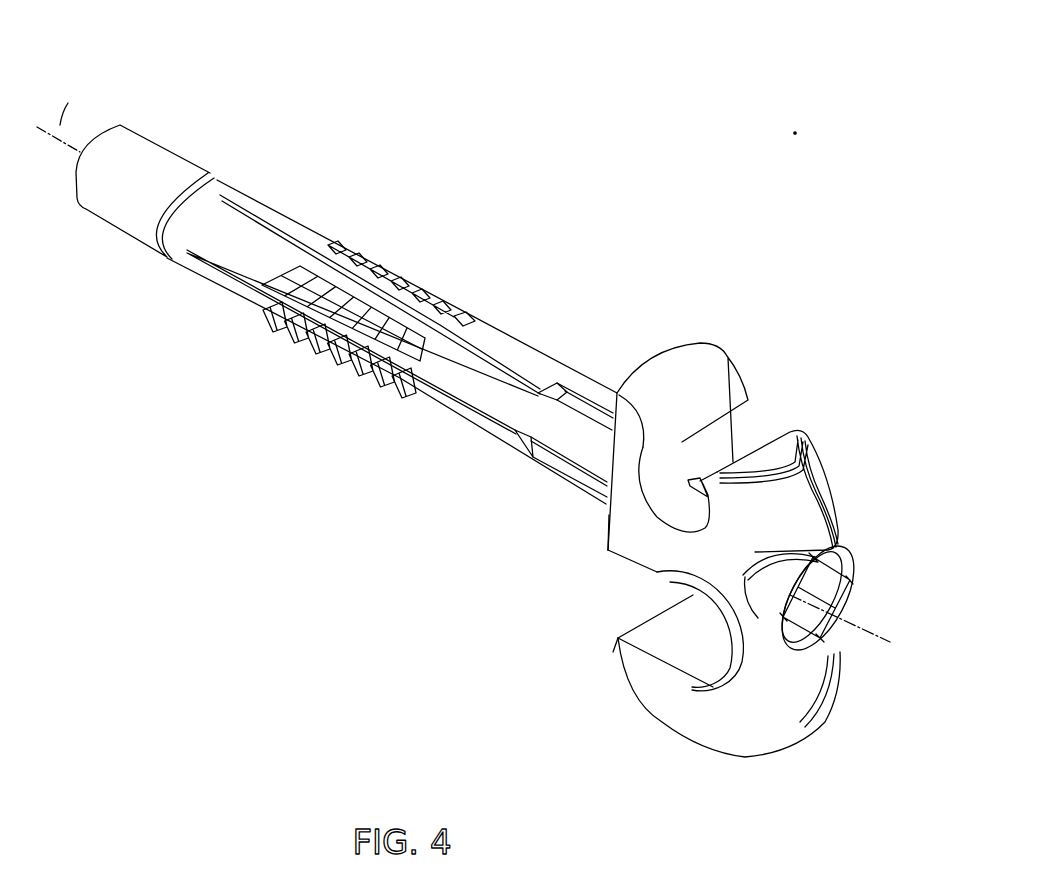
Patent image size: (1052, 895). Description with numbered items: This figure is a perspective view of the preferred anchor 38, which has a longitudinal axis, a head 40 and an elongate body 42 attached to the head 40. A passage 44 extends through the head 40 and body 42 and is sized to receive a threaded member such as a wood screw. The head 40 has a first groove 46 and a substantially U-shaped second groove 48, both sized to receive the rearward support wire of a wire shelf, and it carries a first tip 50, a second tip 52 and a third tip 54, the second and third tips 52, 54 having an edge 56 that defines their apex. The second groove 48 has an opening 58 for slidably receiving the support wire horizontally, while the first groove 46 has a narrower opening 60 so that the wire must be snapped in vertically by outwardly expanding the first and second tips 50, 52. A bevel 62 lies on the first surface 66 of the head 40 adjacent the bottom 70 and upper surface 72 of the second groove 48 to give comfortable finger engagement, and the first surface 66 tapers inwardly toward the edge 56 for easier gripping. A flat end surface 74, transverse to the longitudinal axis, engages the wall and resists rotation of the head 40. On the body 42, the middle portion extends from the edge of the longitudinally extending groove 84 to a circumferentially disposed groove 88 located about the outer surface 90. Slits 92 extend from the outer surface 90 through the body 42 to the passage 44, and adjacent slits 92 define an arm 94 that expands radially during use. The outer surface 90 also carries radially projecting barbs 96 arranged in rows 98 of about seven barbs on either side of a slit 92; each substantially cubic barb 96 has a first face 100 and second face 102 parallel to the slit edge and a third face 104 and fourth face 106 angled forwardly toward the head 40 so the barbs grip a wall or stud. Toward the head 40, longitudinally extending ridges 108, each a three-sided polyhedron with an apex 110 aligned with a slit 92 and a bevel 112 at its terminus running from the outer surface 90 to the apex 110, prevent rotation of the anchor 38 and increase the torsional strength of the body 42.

The anchor 38 is at (660, 88).
The head 40 is at (847, 414).
The elongate body 42 is at (456, 127).
The passage 44 is at (840, 590).
The first groove 46 is at (703, 427).
The second groove 48 is at (640, 649).
The first tip 50 is at (683, 322).
The second tip 52 is at (842, 468).
The third tip 54 is at (727, 768).
The edge 56 is at (833, 523).
The opening 58 is at (615, 610).
The opening 60 is at (797, 398).
The bevel 62 is at (735, 660).
The first surface 66 is at (675, 703).
The bottom 70 is at (715, 668).
The upper surface 72 is at (665, 578).
The flat end surface 74 is at (602, 525).
The longitudinally extending groove 84 is at (817, 637).
The circumferentially disposed groove 88 is at (212, 175).
The outer surface 90 is at (543, 385).
The slit 92 is at (318, 250).
The arm 94 is at (460, 392).
The barb 96 is at (408, 248).
The row 98 is at (260, 268).
The first face 100 is at (417, 343).
The second face 102 is at (318, 338).
The third face 104 is at (415, 400).
The fourth face 106 is at (267, 277).
The ridge 108 is at (588, 412).
The apex 110 is at (538, 467).
The bevel 112 is at (508, 452).